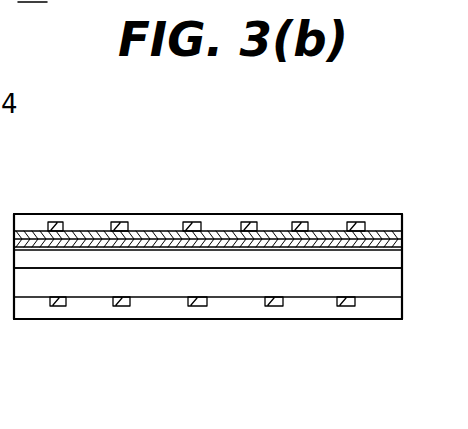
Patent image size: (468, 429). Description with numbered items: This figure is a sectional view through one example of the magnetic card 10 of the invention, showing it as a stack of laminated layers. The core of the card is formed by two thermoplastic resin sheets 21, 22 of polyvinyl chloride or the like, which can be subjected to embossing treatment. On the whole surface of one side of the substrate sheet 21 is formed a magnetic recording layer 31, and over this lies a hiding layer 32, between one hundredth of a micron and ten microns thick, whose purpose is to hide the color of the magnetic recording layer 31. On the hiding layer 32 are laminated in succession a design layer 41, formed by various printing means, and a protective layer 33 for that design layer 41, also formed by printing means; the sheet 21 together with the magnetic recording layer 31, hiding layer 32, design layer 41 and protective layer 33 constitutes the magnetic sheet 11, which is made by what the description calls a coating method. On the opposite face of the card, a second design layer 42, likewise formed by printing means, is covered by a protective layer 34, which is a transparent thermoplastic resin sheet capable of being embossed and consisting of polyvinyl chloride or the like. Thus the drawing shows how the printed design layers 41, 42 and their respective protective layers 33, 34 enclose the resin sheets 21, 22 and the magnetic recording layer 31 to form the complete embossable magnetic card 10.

The magnetic card 10 is at (142, 173).
The magnetic sheet 11 is at (414, 121).
The thermoplastic resin sheet 21 is at (382, 258).
The thermoplastic resin sheet 22 is at (383, 268).
The magnetic recording layer 31 is at (337, 213).
The hiding layer 32 is at (322, 213).
The protective layer 33 is at (267, 213).
The protective layer 34 is at (302, 311).
The design layer 41 is at (245, 214).
The design layer 42 is at (59, 307).